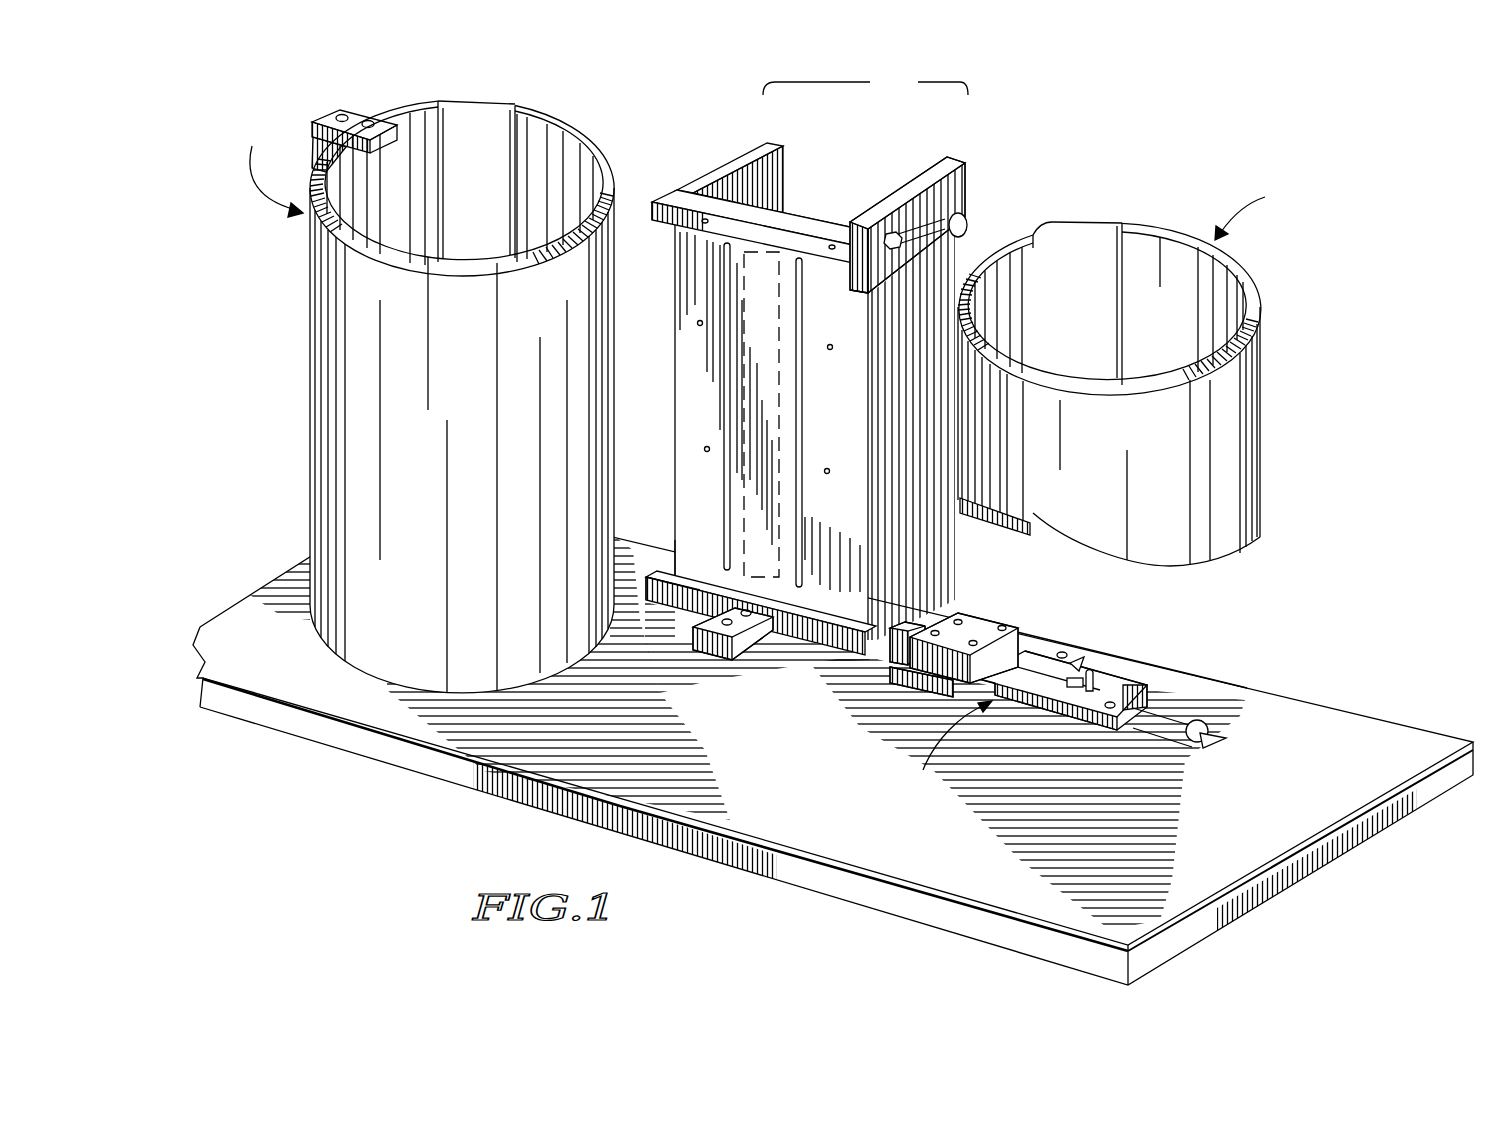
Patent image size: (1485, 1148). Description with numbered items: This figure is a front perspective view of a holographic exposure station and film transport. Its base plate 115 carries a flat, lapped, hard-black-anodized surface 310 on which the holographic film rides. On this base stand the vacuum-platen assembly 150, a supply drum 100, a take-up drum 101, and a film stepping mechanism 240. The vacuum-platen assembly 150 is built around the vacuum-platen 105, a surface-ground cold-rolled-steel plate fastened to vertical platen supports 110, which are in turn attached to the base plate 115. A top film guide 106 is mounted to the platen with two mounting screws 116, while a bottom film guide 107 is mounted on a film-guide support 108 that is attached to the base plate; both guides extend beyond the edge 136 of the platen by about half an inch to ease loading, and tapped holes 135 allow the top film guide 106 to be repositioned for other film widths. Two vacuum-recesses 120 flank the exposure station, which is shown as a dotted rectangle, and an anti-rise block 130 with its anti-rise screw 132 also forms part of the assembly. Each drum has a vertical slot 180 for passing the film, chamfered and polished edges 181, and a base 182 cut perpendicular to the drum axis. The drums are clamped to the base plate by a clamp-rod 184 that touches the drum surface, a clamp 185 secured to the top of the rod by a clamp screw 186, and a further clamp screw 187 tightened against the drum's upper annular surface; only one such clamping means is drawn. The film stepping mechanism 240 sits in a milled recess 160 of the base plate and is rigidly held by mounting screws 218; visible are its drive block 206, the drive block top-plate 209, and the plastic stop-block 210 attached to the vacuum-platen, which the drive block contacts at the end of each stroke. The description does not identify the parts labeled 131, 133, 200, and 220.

The supply drum 100 is at (263, 169).
The take-up drum 101 is at (1132, 372).
The vacuum-platen 105 is at (832, 605).
The top film-guide 106 is at (664, 208).
The bottom film-guide 107 is at (684, 595).
The film-guide support 108 is at (718, 648).
The vertical platen supports 110 is at (745, 157).
The base plate 115 is at (218, 630).
The mounting screws 116 is at (705, 218).
The vacuum-recesses 120 is at (727, 402).
The anti-rise block 130 is at (930, 157).
The clamp screw 131 is at (905, 236).
The anti-rise screw 132 is at (971, 223).
The bracket lower portion 133 is at (858, 295).
The tapped holes 135 is at (700, 320).
The edge of vacuum-platen 136 is at (670, 228).
The vacuum-platen assembly 150 is at (865, 82).
The milled recess 160 is at (1229, 737).
The vertical slot 180 is at (487, 98).
The edges of drums 181 is at (437, 99).
The base of drum 182 is at (353, 668).
The clamp-rod 184 is at (320, 147).
The clamp 185 is at (312, 126).
The clamp screw 186 is at (341, 112).
The clamp screw 187 is at (369, 117).
The carriage plate 200 is at (1112, 672).
The drive block 206 is at (1040, 650).
The drive block top-plate 209 is at (978, 625).
The stop-block 210 is at (900, 620).
The mounting screws 218 is at (1068, 651).
The rod 220 is at (1172, 715).
The film stepping mechanism 240 is at (945, 749).
The surface of base plate 310 is at (1375, 742).